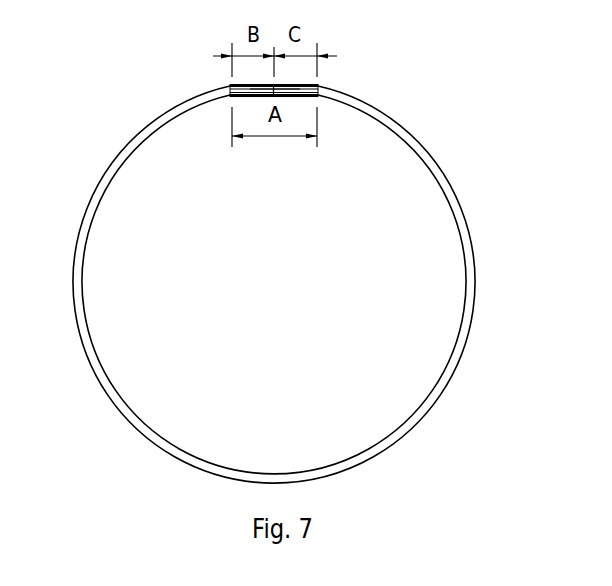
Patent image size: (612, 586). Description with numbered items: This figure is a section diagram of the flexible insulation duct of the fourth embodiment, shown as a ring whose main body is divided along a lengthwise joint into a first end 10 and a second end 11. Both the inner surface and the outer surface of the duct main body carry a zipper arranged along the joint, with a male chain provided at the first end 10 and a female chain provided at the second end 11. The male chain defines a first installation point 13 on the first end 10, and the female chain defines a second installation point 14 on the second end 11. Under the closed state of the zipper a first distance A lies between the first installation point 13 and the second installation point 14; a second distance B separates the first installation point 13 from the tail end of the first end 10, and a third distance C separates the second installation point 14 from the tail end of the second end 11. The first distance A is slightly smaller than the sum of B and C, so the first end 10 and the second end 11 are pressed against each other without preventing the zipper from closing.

The first end 10 is at (158, 184).
The second end 11 is at (382, 185).
The first installation point 13 is at (229, 85).
The second installation point 14 is at (320, 85).